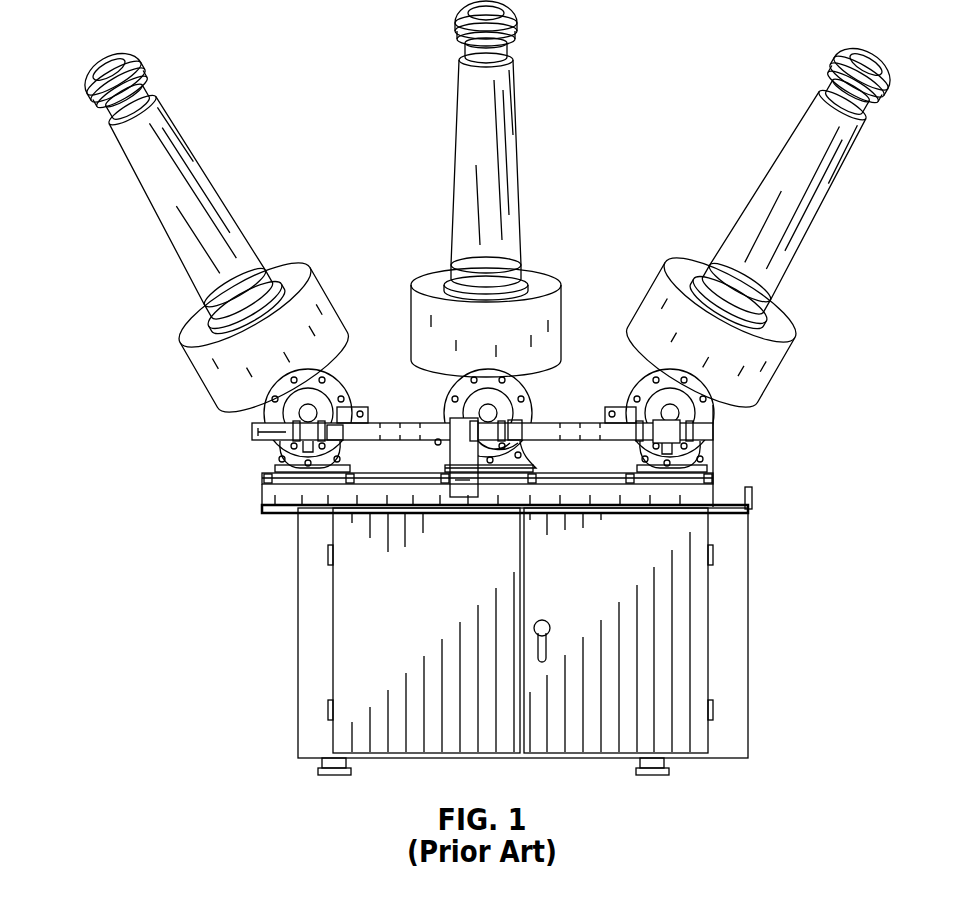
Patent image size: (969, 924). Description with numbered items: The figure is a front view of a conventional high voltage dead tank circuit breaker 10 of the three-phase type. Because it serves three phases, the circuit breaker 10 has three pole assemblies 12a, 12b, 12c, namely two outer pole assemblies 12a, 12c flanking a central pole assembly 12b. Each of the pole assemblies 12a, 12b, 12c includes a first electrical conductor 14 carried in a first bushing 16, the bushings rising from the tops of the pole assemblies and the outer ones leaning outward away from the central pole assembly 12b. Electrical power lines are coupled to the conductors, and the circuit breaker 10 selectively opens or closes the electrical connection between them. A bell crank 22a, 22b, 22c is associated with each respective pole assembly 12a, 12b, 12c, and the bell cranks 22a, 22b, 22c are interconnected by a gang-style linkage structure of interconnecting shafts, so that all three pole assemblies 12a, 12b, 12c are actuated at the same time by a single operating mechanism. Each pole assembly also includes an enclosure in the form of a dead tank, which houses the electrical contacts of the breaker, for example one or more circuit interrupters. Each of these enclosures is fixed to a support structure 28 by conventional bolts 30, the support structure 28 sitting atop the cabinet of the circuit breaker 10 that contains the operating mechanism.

The dead tank circuit breaker 10 is at (304, 622).
The outer pole assembly 12a is at (318, 273).
The central pole assembly 12b is at (563, 318).
The outer pole assembly 12c is at (778, 366).
The first electrical conductor 14 is at (100, 63).
The first bushing 16 is at (200, 186).
The bell crank 22a is at (305, 435).
The bell crank 22b is at (488, 433).
The bell crank 22c is at (673, 432).
The support structure 28 is at (287, 470).
The bolt 30 is at (352, 444).